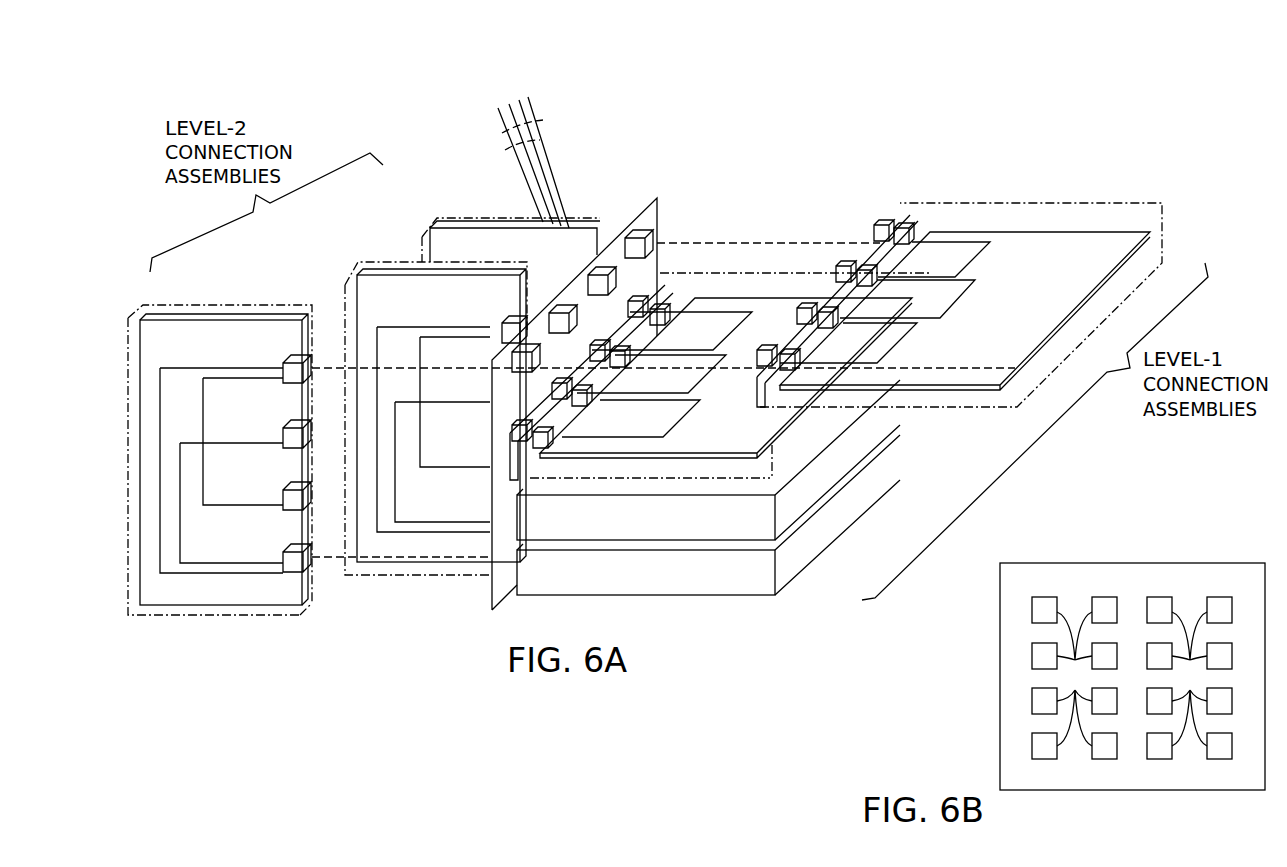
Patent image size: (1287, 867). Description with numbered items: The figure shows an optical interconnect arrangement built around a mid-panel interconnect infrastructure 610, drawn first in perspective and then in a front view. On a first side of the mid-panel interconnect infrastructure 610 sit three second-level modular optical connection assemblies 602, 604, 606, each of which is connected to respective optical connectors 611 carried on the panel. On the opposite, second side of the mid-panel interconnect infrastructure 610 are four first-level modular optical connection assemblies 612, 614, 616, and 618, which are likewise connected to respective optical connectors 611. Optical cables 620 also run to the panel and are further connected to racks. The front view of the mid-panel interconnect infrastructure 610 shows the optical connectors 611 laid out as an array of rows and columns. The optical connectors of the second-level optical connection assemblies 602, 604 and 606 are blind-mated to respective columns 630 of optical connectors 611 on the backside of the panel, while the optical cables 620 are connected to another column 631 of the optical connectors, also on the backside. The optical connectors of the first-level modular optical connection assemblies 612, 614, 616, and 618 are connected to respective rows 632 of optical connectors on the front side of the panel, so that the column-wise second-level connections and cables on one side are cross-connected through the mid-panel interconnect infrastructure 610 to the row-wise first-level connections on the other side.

In FIG. 6A, the level-2 modular optical connection assembly 602 is at (464, 222).
In FIG. 6A, the level-2 modular optical connection assembly 604 is at (390, 578).
In FIG. 6A, the level-2 modular optical connection assembly 606 is at (205, 615).
In FIG. 6A, the mid-panel interconnect infrastructure 610 is at (639, 227).
In FIG. 6B, the mid-panel interconnect infrastructure 610 is at (1130, 792).
In FIG. 6A, the optical connector 611 is at (526, 352).
In FIG. 6B, the optical connector 611 is at (1132, 679).
In FIG. 6A, the level-1 modular optical connection assembly 612 is at (1125, 270).
In FIG. 6A, the level-1 modular optical connection assembly 614 is at (773, 288).
In FIG. 6A, the level-1 modular optical connection assembly 616 is at (853, 430).
In FIG. 6A, the level-1 modular optical connection assembly 618 is at (851, 482).
In FIG. 6A, the optical cables 620 is at (544, 124).
In FIG. 6B, the column of optical connectors 630 is at (1158, 555).
In FIG. 6B, the column of optical connectors 631 is at (1217, 555).
In FIG. 6B, the row of optical connectors 632 is at (980, 612).